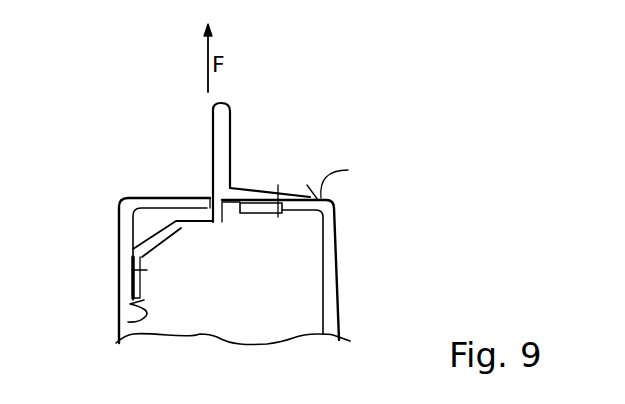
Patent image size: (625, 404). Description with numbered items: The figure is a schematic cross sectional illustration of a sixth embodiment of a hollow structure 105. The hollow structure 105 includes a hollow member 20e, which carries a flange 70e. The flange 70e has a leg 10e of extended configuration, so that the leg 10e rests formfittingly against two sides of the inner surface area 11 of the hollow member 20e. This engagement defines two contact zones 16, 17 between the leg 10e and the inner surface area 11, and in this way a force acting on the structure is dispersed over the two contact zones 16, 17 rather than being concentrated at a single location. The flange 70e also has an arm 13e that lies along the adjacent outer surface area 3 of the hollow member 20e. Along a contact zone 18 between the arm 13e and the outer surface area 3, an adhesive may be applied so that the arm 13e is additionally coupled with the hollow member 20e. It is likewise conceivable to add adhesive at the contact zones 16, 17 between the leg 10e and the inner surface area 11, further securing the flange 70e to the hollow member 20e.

The hollow structure 105 is at (317, 157).
The flange 70e is at (256, 147).
The contact zone 16 is at (190, 212).
The arm 13e is at (252, 193).
The outer surface area 3 is at (349, 174).
The contact zone 17 is at (143, 258).
The leg 10e is at (167, 233).
The contact zone 18 is at (252, 213).
The hollow member 20e is at (327, 278).
The inner surface area 11 is at (137, 323).